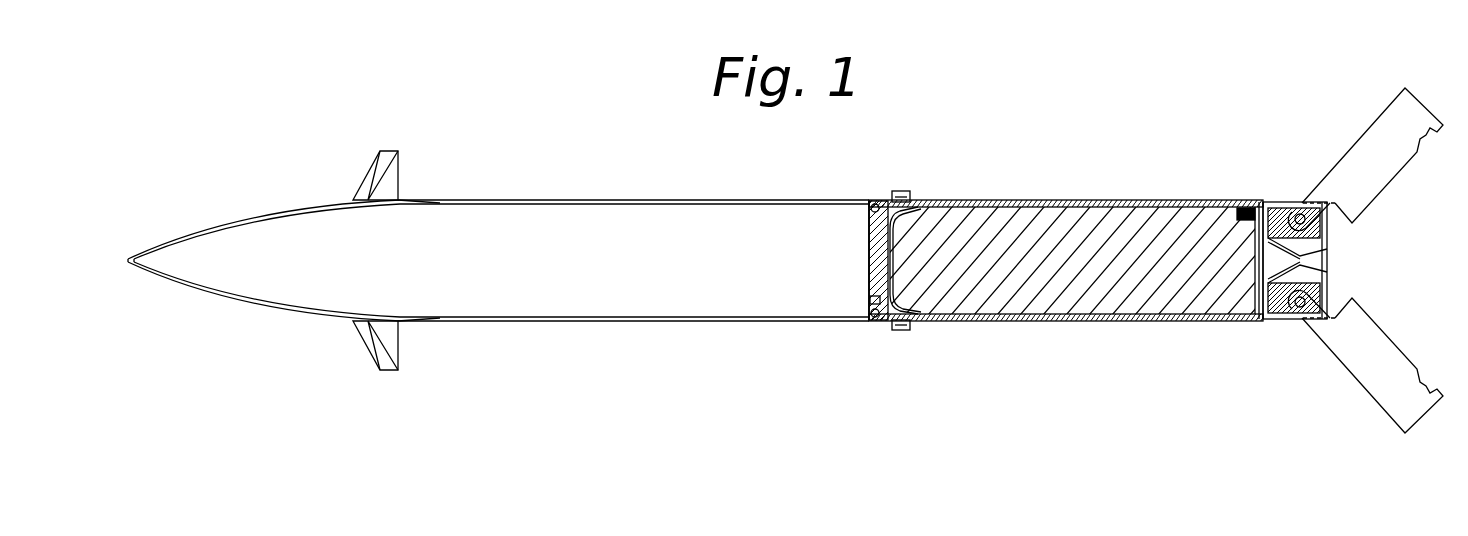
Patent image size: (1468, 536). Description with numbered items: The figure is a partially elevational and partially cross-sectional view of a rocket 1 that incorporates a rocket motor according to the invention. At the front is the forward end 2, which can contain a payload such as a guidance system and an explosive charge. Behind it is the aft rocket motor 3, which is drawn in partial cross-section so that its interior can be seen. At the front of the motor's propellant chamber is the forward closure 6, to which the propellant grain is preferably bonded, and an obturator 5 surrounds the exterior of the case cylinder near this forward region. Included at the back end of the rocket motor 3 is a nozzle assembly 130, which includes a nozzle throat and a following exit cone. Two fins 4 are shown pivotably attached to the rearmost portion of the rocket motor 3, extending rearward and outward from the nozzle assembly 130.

The rocket 1 is at (966, 157).
The forward end 2 is at (623, 201).
The rocket motor 3 is at (995, 322).
The fins 4 is at (1396, 112).
The obturator 5 is at (900, 331).
The forward closure 6 is at (882, 201).
The nozzle assembly 130 is at (1330, 262).